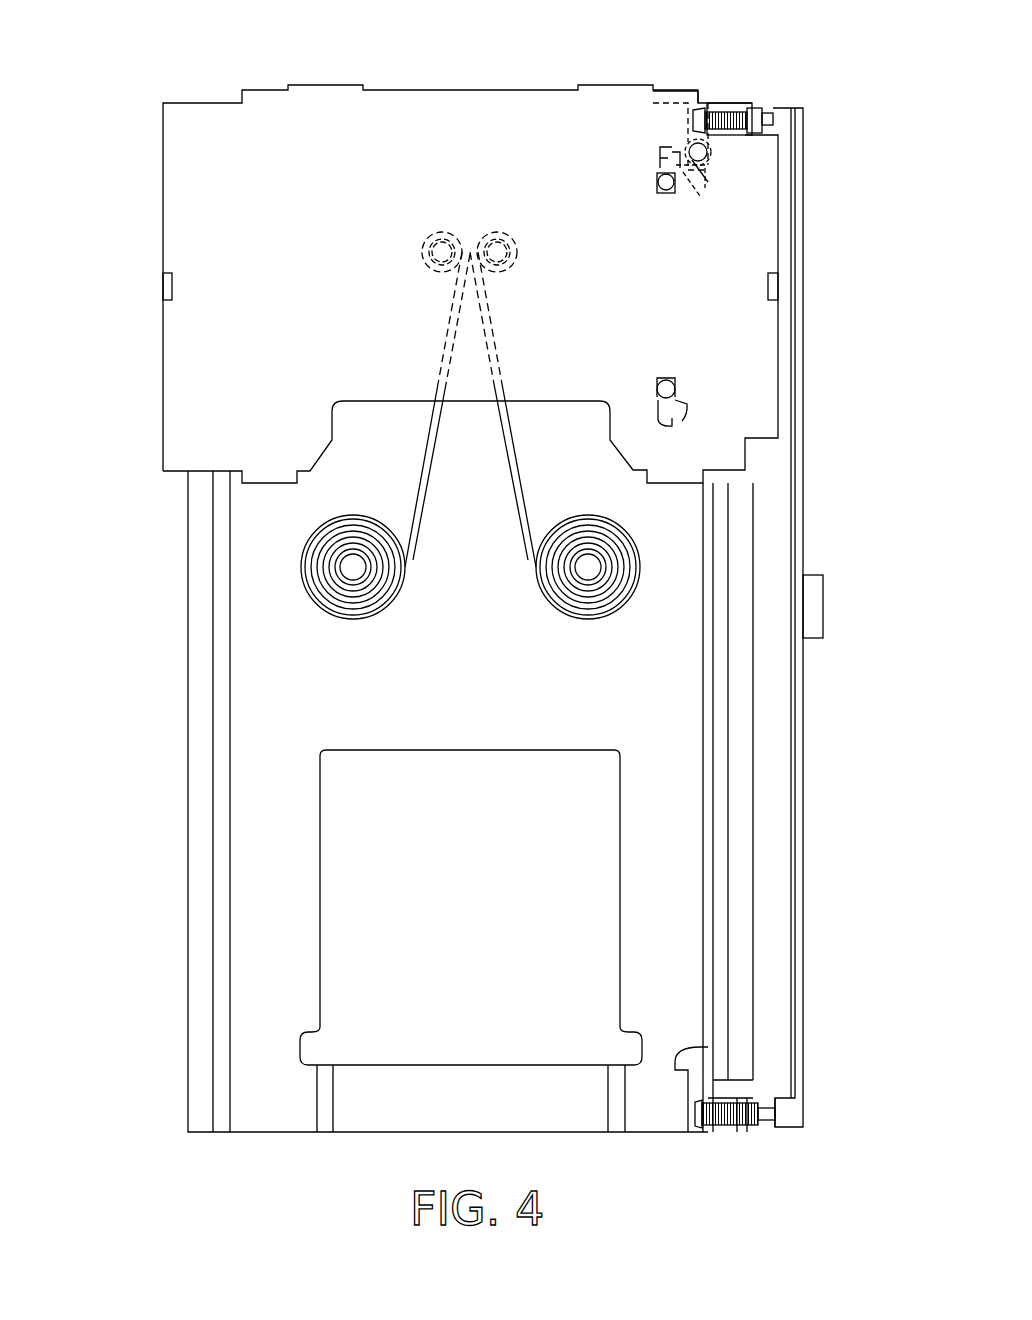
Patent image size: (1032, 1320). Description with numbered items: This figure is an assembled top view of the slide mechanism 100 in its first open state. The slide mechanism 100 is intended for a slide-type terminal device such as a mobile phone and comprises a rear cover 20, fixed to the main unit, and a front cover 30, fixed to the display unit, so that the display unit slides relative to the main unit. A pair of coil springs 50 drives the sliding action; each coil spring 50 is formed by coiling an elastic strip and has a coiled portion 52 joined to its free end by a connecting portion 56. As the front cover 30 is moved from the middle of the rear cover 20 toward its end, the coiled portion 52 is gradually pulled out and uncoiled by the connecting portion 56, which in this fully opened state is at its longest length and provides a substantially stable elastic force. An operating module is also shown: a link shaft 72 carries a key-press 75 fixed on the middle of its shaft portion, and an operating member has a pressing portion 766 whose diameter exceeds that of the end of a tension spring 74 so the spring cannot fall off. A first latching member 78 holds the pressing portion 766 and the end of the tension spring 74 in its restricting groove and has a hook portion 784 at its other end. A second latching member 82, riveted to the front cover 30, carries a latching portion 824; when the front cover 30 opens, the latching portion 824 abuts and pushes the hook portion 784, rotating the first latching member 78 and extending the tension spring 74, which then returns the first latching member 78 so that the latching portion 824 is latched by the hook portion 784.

The slide mechanism 100 is at (383, 33).
The rear cover 20 is at (257, 697).
The front cover 30 is at (205, 190).
The coil spring 50 is at (625, 535).
The coiled portion 52 is at (320, 562).
The connecting portion 56 is at (420, 470).
The link shaft 72 is at (803, 447).
The tension spring 74 is at (753, 103).
The key-press 75 is at (818, 612).
The pressing portion 766 is at (700, 115).
The first latching member 78 is at (712, 165).
The hook portion 784 is at (697, 187).
The second latching member 82 is at (650, 182).
The latching portion 824 is at (657, 150).